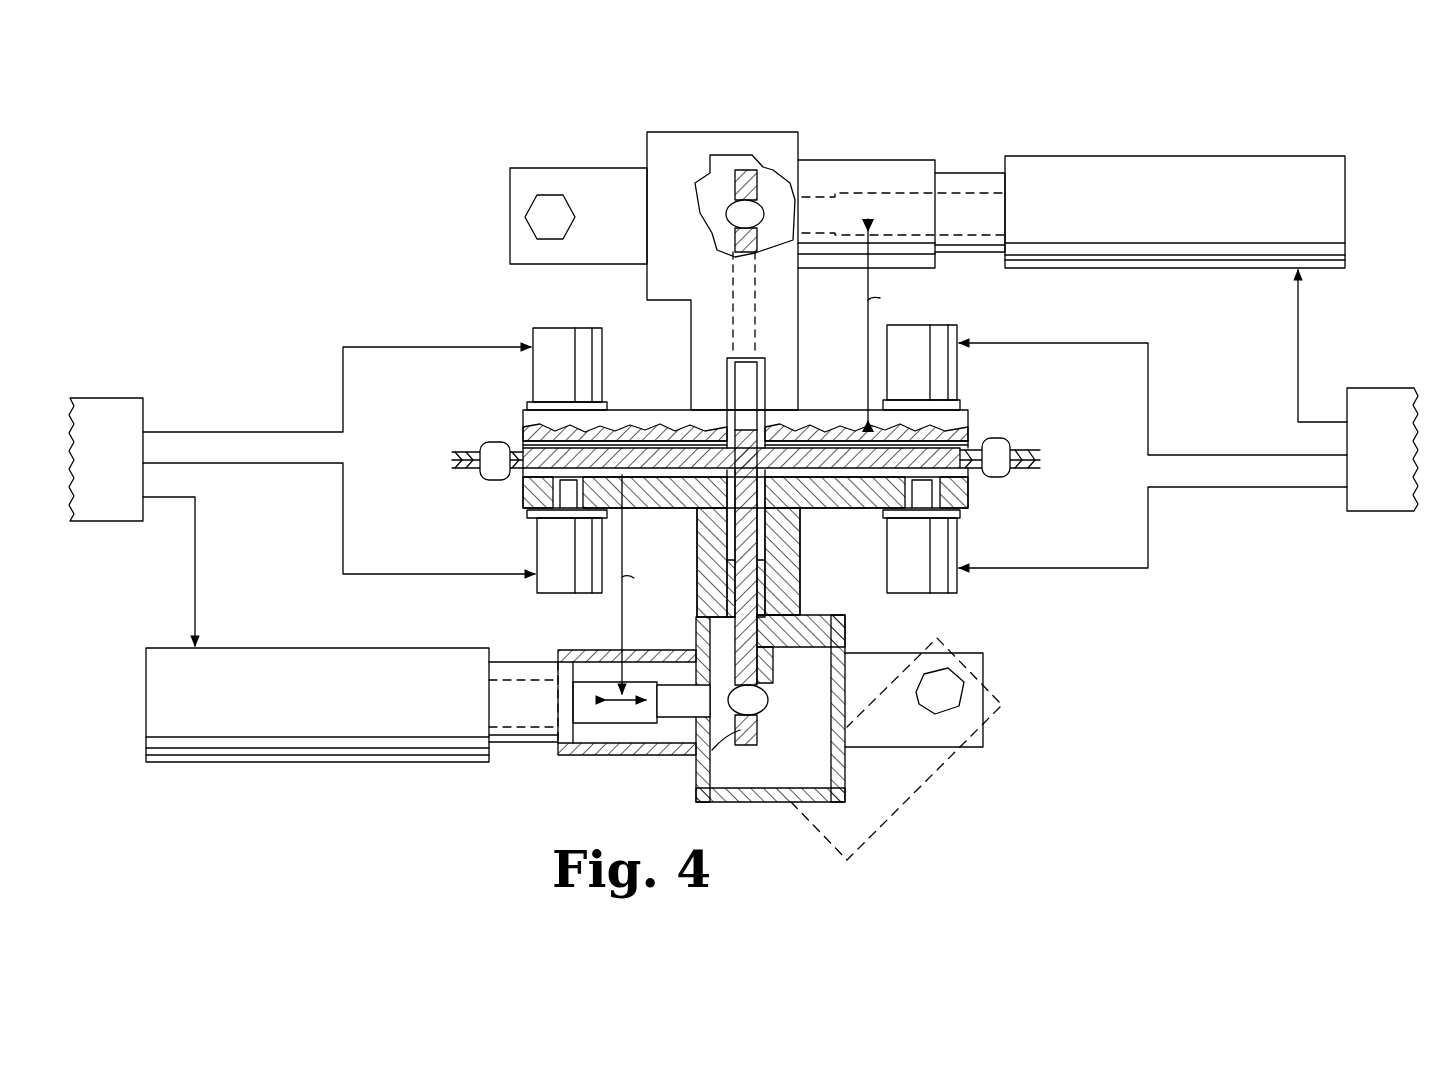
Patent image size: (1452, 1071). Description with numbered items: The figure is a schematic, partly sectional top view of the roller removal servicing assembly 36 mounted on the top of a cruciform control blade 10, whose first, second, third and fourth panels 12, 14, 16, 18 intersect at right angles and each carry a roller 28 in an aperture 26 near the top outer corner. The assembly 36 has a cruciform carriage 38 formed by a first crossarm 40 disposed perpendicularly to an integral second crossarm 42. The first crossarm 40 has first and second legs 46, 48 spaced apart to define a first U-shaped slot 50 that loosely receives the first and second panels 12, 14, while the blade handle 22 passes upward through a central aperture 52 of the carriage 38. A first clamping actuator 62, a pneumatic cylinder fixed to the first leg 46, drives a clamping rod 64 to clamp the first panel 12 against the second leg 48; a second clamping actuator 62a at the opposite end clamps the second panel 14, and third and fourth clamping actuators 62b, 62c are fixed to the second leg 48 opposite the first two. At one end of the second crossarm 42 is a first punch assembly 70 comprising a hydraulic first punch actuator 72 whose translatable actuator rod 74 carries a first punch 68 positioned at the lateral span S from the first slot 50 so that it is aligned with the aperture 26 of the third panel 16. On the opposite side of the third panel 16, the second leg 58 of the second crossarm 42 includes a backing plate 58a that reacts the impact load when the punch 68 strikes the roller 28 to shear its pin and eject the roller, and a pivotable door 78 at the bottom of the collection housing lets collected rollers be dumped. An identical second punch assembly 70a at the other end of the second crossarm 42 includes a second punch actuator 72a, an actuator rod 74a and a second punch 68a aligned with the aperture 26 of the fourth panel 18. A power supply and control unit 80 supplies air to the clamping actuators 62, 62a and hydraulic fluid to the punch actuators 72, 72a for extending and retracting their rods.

The cruciform control rod or blade 10 is at (452, 447).
The first panel 12 is at (455, 472).
The second panel 14 is at (1030, 470).
The third panel 16 is at (700, 768).
The fourth panel 18 is at (763, 168).
The handle 22 is at (740, 393).
The aperture 26 is at (727, 222).
The roller 28 is at (725, 210).
The roller removal servicing assembly 36 is at (259, 364).
The cruciform carriage 38 is at (704, 130).
The first crossarm 40 is at (832, 509).
The second crossarm 42 is at (805, 563).
The first leg 46 is at (968, 418).
The second leg 48 is at (968, 497).
The first U-shaped slot 50 is at (518, 445).
The central aperture 52 is at (762, 402).
The second leg 58 is at (800, 140).
The backing plate 58a is at (773, 740).
The first clamping actuator 62 is at (567, 369).
The second clamping actuator 62a is at (921, 367).
The third clamping actuator 62b is at (567, 551).
The fourth clamping actuator 62c is at (921, 551).
The clamping rod 64 is at (583, 435).
The first punch 68 is at (667, 680).
The second punch 68a is at (790, 195).
The first punch assembly 70 is at (465, 789).
The second punch assembly 70a is at (898, 150).
The first punch actuator 72 is at (317, 705).
The second punch actuator 72a is at (1175, 212).
The actuator rod 74 is at (540, 746).
The actuator rod 74a is at (950, 190).
The pivotable door 78 is at (912, 795).
The power supply and control unit 80 is at (743, 458).